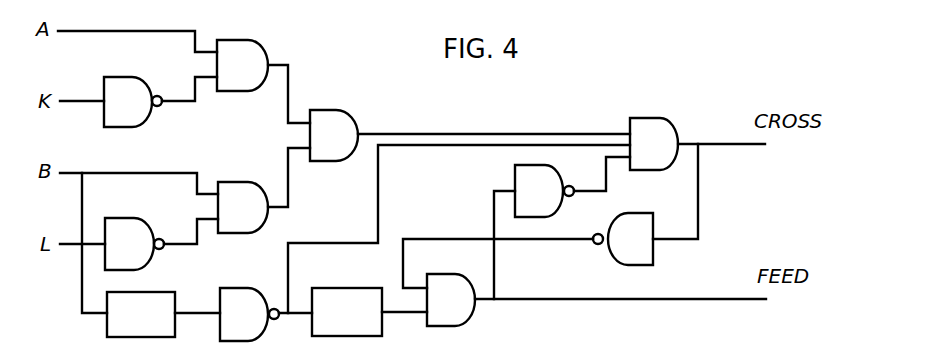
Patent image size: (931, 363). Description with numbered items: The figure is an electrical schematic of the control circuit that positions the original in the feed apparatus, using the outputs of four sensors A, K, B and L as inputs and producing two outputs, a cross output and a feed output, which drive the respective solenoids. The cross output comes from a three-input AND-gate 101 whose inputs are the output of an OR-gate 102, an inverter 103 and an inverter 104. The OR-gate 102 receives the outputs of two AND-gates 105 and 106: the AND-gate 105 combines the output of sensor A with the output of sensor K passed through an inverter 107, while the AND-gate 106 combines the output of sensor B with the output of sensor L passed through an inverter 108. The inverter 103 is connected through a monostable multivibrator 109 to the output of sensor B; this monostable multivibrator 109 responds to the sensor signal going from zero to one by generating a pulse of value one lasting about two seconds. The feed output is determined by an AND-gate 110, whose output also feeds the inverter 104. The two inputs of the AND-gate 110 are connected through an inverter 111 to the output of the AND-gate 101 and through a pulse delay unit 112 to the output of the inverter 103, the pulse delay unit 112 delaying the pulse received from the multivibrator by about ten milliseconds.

The AND-gate 101 is at (650, 123).
The OR-gate 102 is at (340, 115).
The inverter 103 is at (243, 294).
The inverter 104 is at (543, 173).
The AND-gate 105 is at (248, 46).
The AND-gate 106 is at (240, 186).
The inverter 107 is at (135, 80).
The inverter 108 is at (135, 226).
The monostable multivibrator 109 is at (150, 298).
The AND-gate 110 is at (430, 278).
The inverter 111 is at (627, 218).
The pulse delay unit 112 is at (328, 293).